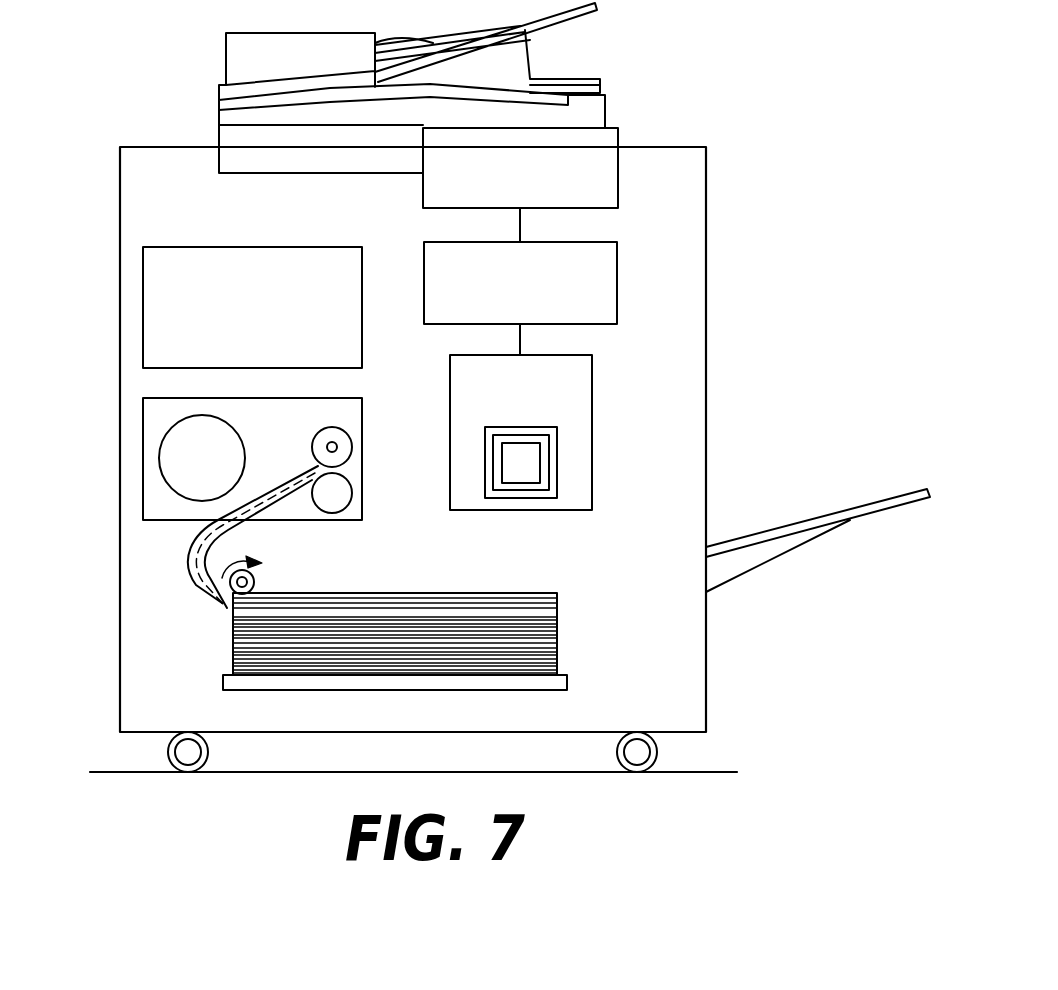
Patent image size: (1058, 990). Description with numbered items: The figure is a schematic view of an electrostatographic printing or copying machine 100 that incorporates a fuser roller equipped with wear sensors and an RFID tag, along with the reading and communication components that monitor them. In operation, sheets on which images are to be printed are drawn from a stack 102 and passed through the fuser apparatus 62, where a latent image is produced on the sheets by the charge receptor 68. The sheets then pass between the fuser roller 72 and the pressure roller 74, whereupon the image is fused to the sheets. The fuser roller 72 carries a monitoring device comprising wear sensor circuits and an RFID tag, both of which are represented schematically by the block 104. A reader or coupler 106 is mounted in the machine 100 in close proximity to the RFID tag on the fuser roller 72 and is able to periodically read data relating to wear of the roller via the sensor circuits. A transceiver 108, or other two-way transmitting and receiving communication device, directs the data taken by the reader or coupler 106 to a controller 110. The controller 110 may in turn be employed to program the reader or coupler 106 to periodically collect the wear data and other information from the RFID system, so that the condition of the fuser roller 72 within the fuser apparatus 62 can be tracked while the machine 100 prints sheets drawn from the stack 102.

The electrostatographic printing or copying machine 100 is at (102, 70).
The stack 102 is at (452, 598).
The block 104 is at (145, 300).
The reader or coupler 106 is at (577, 460).
The transceiver 108 is at (602, 310).
The controller 110 is at (608, 138).
The fuser apparatus 62 is at (143, 498).
The charge receptor 68 is at (163, 437).
The fuser roller 72 is at (352, 440).
The pressure roller 74 is at (347, 492).